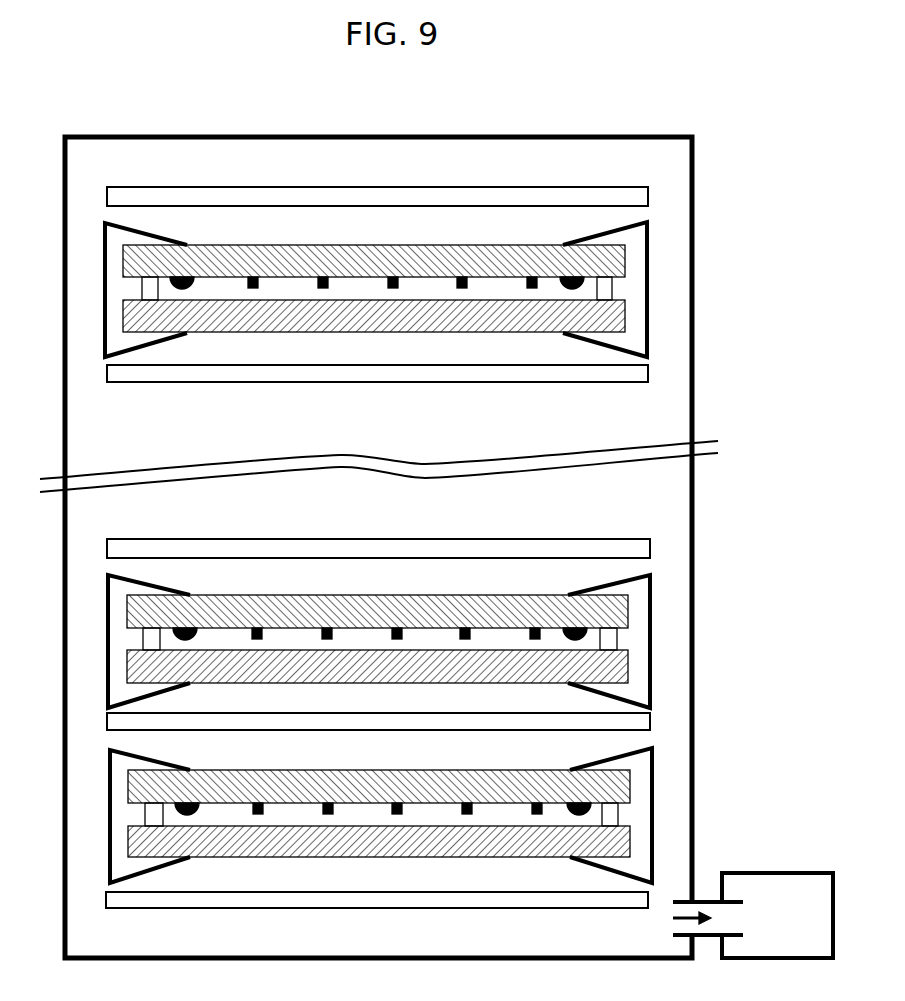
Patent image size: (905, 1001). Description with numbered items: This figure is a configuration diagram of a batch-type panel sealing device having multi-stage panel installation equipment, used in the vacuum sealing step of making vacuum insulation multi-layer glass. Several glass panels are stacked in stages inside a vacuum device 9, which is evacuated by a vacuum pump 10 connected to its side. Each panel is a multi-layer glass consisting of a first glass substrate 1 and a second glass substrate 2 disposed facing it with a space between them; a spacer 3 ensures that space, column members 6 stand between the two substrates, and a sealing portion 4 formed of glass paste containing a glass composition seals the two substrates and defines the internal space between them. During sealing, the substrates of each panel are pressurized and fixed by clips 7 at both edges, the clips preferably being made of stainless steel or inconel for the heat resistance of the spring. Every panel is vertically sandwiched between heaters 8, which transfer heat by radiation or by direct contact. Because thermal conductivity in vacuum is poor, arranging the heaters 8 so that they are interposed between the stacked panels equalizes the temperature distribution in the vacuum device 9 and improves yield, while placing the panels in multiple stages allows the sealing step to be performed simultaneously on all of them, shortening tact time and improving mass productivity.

The first glass substrate 1 is at (337, 768).
The second glass substrate 2 is at (393, 843).
The spacer 3 is at (387, 802).
The sealing portion 4 is at (575, 806).
The column members 6 is at (170, 818).
The clip 7 is at (108, 806).
The heater 8 is at (400, 715).
The vacuum device 9 is at (692, 725).
The vacuum pump 10 is at (767, 873).